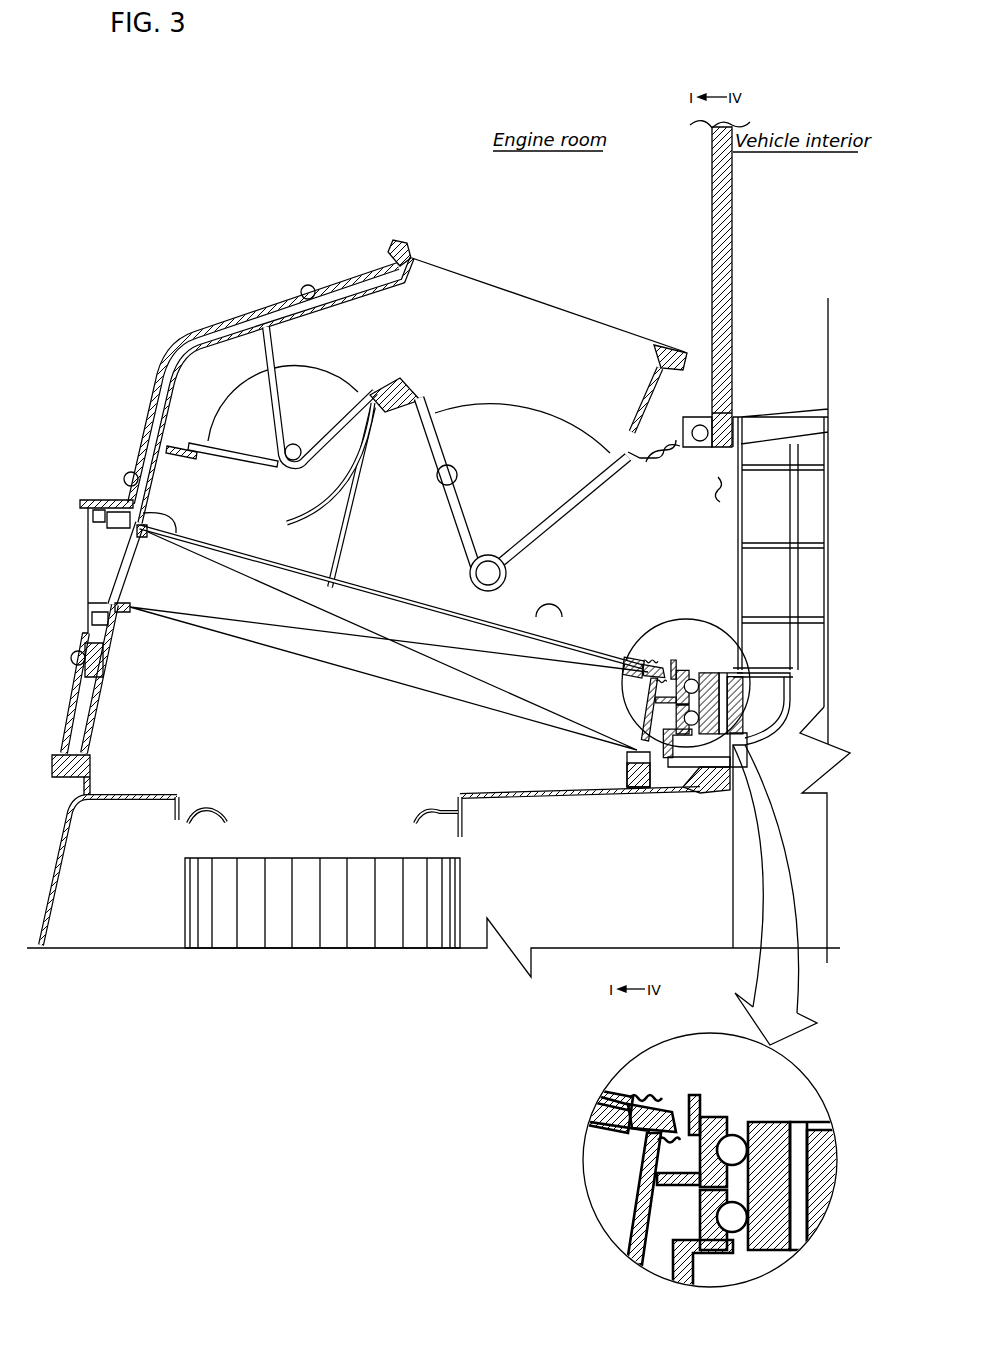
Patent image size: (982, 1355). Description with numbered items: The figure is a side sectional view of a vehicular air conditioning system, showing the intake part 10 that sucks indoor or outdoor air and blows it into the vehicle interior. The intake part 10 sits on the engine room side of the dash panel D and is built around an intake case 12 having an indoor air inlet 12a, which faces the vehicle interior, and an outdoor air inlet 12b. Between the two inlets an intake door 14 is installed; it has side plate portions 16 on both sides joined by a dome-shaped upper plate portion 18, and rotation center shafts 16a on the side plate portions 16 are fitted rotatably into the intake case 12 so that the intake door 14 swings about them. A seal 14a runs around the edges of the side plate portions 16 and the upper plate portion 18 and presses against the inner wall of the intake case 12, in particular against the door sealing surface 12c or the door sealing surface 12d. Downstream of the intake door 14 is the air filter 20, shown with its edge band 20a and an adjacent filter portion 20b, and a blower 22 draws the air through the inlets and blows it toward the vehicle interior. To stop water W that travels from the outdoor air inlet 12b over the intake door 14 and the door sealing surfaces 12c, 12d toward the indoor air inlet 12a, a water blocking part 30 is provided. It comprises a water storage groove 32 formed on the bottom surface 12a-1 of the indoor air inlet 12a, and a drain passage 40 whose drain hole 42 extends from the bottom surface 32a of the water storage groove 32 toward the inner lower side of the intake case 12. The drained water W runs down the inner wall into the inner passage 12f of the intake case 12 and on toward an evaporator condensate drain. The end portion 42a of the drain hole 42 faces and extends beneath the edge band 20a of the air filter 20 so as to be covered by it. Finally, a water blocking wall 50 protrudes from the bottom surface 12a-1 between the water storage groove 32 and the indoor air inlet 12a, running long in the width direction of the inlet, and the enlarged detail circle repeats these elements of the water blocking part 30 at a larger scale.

The intake part 10 is at (238, 492).
The intake case 12 is at (162, 398).
The indoor air inlet 12a is at (740, 488).
The bottom surface of the indoor air inlet 12a-1 is at (640, 668).
The outdoor air inlet 12b is at (450, 305).
The door sealing surface 12c is at (440, 483).
The door sealing surface 12d is at (563, 623).
The inner passage 12f is at (385, 850).
The intake door 14 is at (528, 401).
The seal 14a is at (627, 458).
The side plate portions 16 is at (543, 447).
The rotation center shafts 16a is at (492, 572).
The upper plate portion 18 is at (493, 400).
The air filter 20 is at (128, 503).
The edge band 20a is at (622, 1222).
The bracket inclined plate 20b is at (620, 1250).
The blower 22 is at (187, 922).
The water blocking part 30 is at (733, 919).
The water storage groove 32 is at (676, 668).
The bottom surface of the water storage groove 32a is at (746, 1222).
The drain passage 40 is at (575, 912).
The drain hole 42 is at (617, 752).
The end portion of the drain hole 42a is at (647, 1178).
The water blocking wall 50 is at (672, 658).
The water W is at (637, 1097).
The dash panel D is at (712, 147).